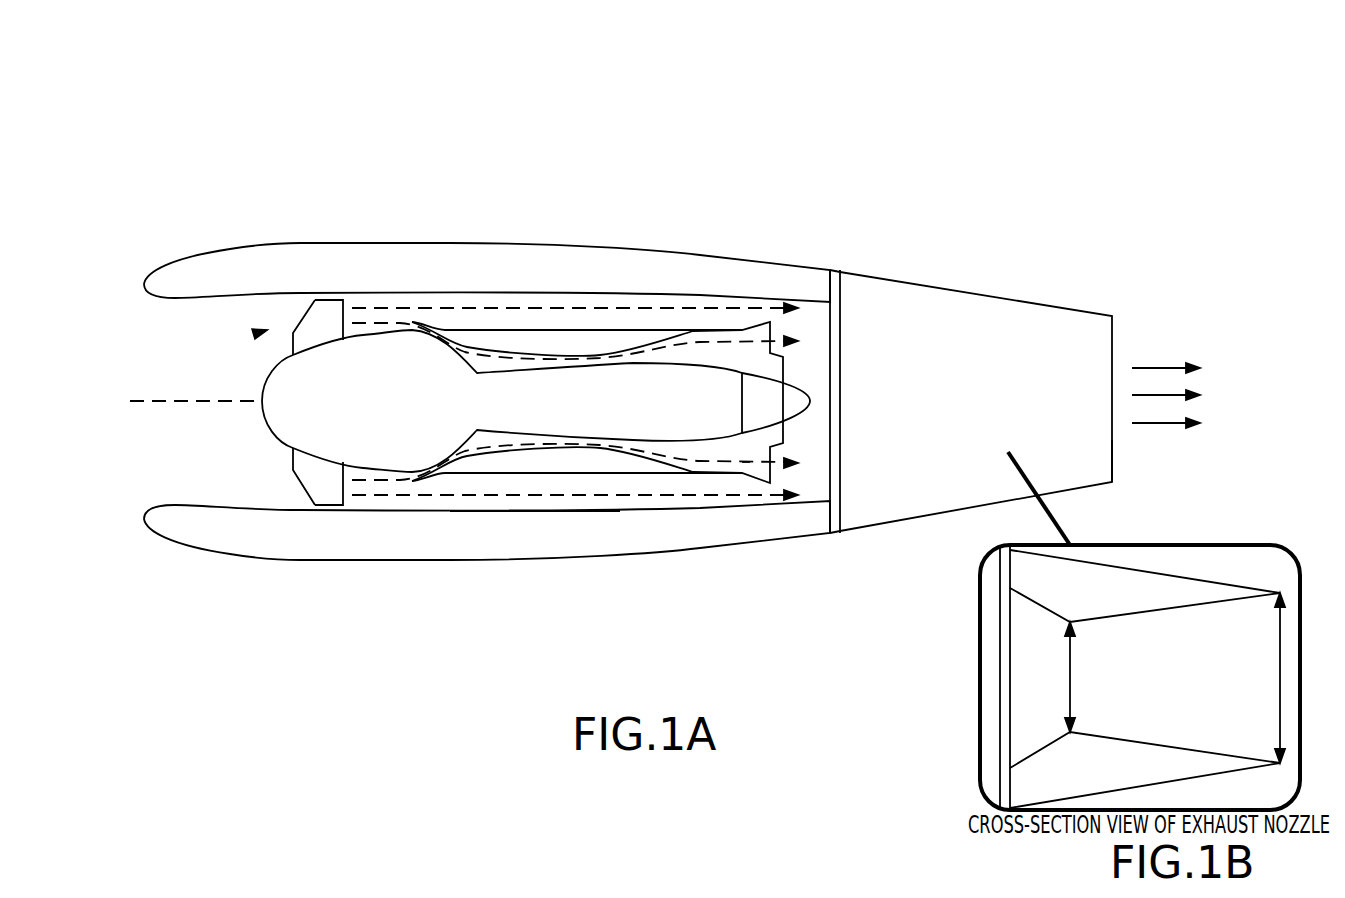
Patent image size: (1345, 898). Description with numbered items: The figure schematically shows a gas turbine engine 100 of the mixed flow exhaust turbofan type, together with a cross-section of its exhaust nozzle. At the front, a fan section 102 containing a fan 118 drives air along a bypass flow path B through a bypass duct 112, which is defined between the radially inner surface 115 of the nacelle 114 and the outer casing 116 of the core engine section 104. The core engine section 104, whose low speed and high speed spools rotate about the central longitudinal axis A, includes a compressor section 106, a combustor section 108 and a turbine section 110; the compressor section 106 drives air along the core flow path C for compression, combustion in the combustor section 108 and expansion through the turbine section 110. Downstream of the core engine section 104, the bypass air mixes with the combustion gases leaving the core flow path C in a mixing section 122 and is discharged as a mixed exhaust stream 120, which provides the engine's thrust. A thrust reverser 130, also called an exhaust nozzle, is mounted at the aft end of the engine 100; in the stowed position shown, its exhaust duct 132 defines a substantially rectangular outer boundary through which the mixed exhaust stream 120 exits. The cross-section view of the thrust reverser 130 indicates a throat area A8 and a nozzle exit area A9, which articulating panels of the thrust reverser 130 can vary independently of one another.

In FIG. 1A, the gas turbine engine 100 is at (162, 182).
In FIG. 1A, the fan section 102 is at (260, 331).
In FIG. 1A, the core engine section 104 is at (440, 383).
In FIG. 1A, the compressor section 106 is at (470, 330).
In FIG. 1A, the combustor section 108 is at (598, 336).
In FIG. 1A, the turbine section 110 is at (708, 312).
In FIG. 1A, the bypass duct 112 is at (470, 498).
In FIG. 1A, the nacelle 114 is at (282, 540).
In FIG. 1A, the radially inner surface 115 is at (537, 515).
In FIG. 1A, the outer casing 116 is at (596, 475).
In FIG. 1A, the fan 118 is at (302, 483).
In FIG. 1A, the mixed exhaust stream 120 is at (1160, 368).
In FIG. 1A, the mixing section 122 is at (810, 328).
In FIG. 1A, the thrust reverser 130 is at (955, 232).
In FIG. 1A, the exhaust duct 132 is at (1112, 466).
In FIG. 1A, the central longitudinal axis A is at (153, 403).
In FIG. 1A, the bypass flow path B is at (403, 497).
In FIG. 1A, the core flow path C is at (733, 457).
In FIG. 1B, the throat area A8 is at (1056, 677).
In FIG. 1B, the nozzle exit area A9 is at (1267, 678).